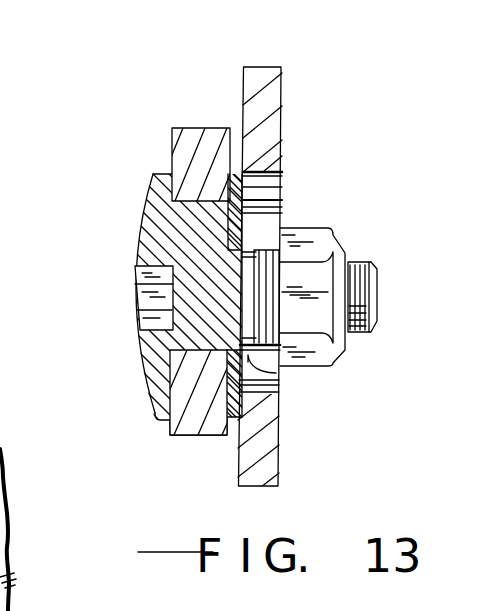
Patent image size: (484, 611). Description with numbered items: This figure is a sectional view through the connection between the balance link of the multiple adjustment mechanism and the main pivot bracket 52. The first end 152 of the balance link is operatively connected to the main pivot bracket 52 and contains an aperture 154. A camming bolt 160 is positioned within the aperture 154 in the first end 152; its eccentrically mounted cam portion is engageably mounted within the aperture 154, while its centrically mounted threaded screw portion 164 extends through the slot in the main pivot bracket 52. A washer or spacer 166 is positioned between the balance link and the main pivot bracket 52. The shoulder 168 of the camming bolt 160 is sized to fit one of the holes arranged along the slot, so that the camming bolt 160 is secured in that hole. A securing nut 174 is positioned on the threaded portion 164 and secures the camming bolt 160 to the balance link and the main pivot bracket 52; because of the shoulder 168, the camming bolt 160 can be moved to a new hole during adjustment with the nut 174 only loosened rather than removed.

The main pivot bracket 52 is at (258, 66).
The first end 152 is at (172, 128).
The aperture 154 is at (187, 200).
The camming bolt 160 is at (137, 240).
The threaded screw portion 164 is at (163, 385).
The washer or spacer 166 is at (237, 173).
The shoulder 168 is at (278, 377).
The securing nut 174 is at (320, 226).